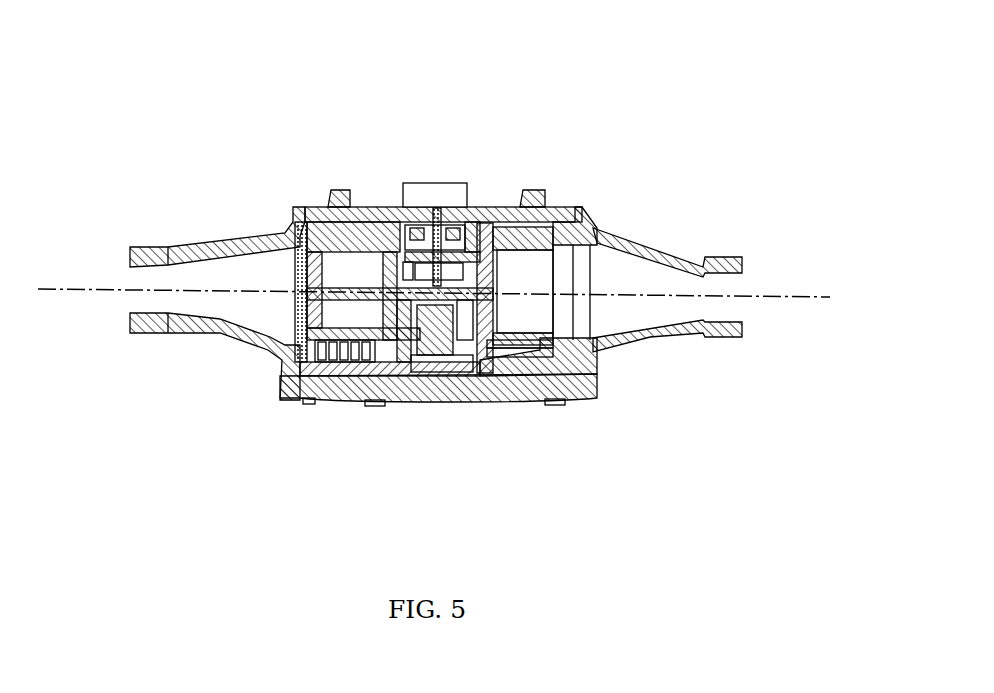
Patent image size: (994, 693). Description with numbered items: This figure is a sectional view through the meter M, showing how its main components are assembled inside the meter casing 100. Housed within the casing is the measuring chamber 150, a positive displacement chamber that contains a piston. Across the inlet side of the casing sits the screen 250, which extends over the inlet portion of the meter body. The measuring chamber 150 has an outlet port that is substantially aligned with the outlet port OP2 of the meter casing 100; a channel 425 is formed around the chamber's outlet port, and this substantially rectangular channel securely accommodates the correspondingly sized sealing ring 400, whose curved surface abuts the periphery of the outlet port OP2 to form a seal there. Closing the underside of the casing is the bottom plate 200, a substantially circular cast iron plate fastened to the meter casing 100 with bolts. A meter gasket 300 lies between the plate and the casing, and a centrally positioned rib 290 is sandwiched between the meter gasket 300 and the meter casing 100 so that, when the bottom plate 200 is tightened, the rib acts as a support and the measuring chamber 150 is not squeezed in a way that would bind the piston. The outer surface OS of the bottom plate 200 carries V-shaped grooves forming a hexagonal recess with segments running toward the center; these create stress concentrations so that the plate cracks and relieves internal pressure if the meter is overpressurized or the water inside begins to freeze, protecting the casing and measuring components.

The meter casing 100 is at (583, 222).
The measuring chamber 150 is at (582, 320).
The bottom plate 200 is at (292, 404).
The screen 250 is at (293, 270).
The centrally positioned rib 290 is at (283, 343).
The meter gasket 300 is at (388, 394).
The sealing ring 400 is at (560, 348).
The channel 425 is at (545, 363).
The outer surface OS is at (450, 407).
The inner surface IS is at (523, 387).
The outlet port of the meter casing OP2 is at (603, 282).
The meter M is at (665, 244).